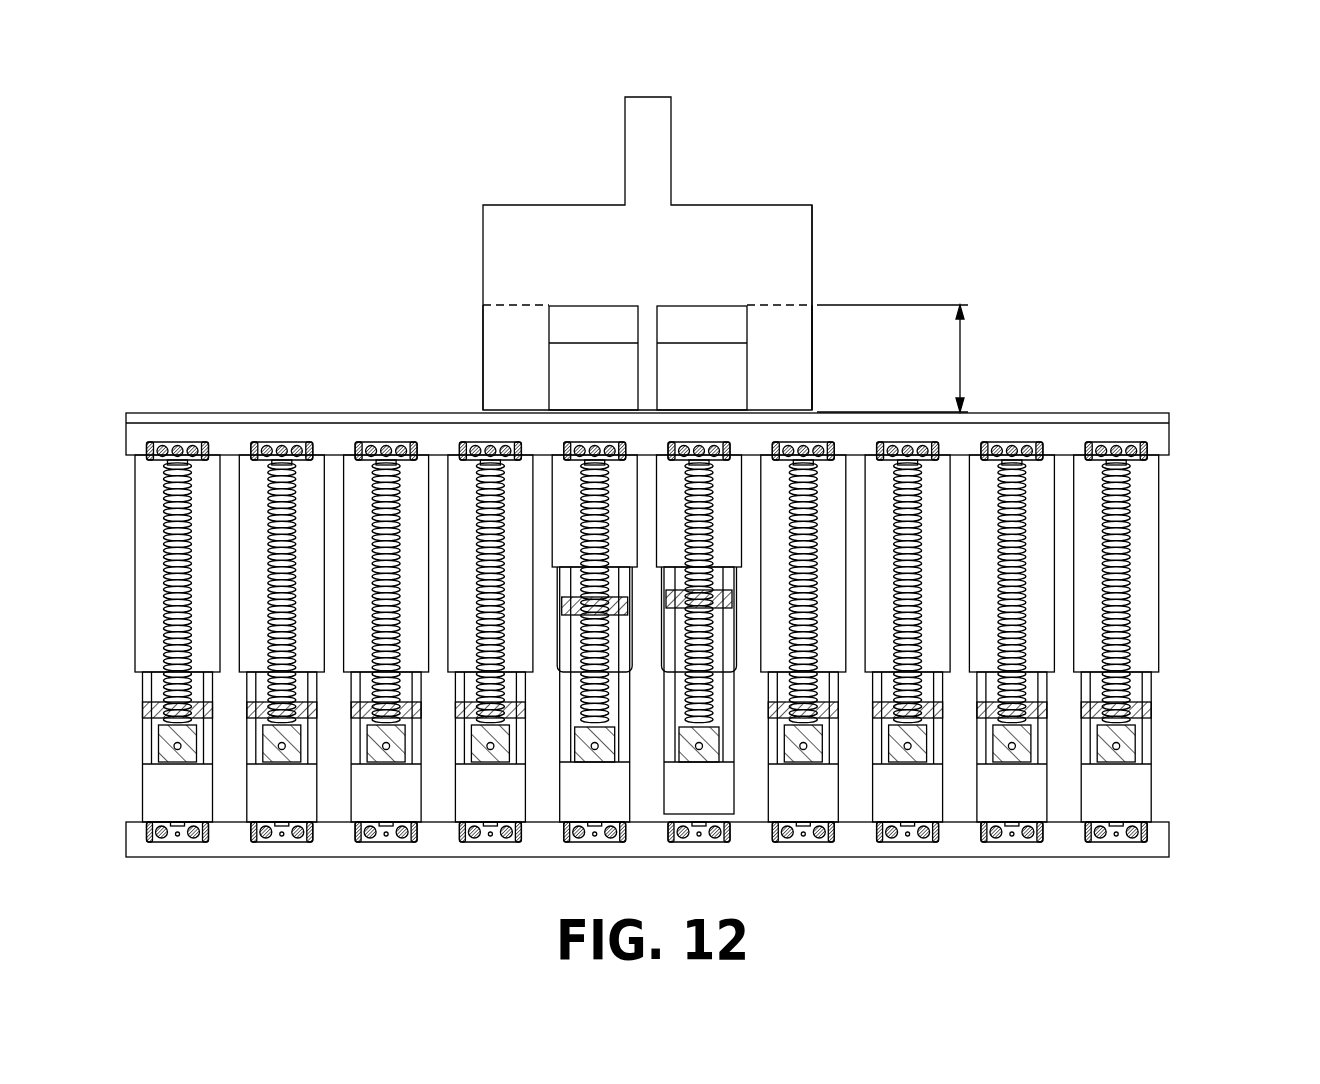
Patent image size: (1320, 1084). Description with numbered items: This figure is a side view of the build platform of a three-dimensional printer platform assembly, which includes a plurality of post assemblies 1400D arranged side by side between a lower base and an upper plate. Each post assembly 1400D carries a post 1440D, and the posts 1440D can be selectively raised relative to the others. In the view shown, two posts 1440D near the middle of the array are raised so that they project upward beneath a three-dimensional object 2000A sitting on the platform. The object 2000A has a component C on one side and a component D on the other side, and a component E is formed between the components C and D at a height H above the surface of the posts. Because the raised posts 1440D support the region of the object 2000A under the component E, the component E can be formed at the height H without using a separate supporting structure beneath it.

The 3D object 2000A is at (644, 97).
The component E is at (712, 258).
The component C is at (483, 338).
The component D is at (812, 347).
The height H is at (962, 350).
The post 1440D is at (590, 375).
The post assembly 1400D is at (708, 581).